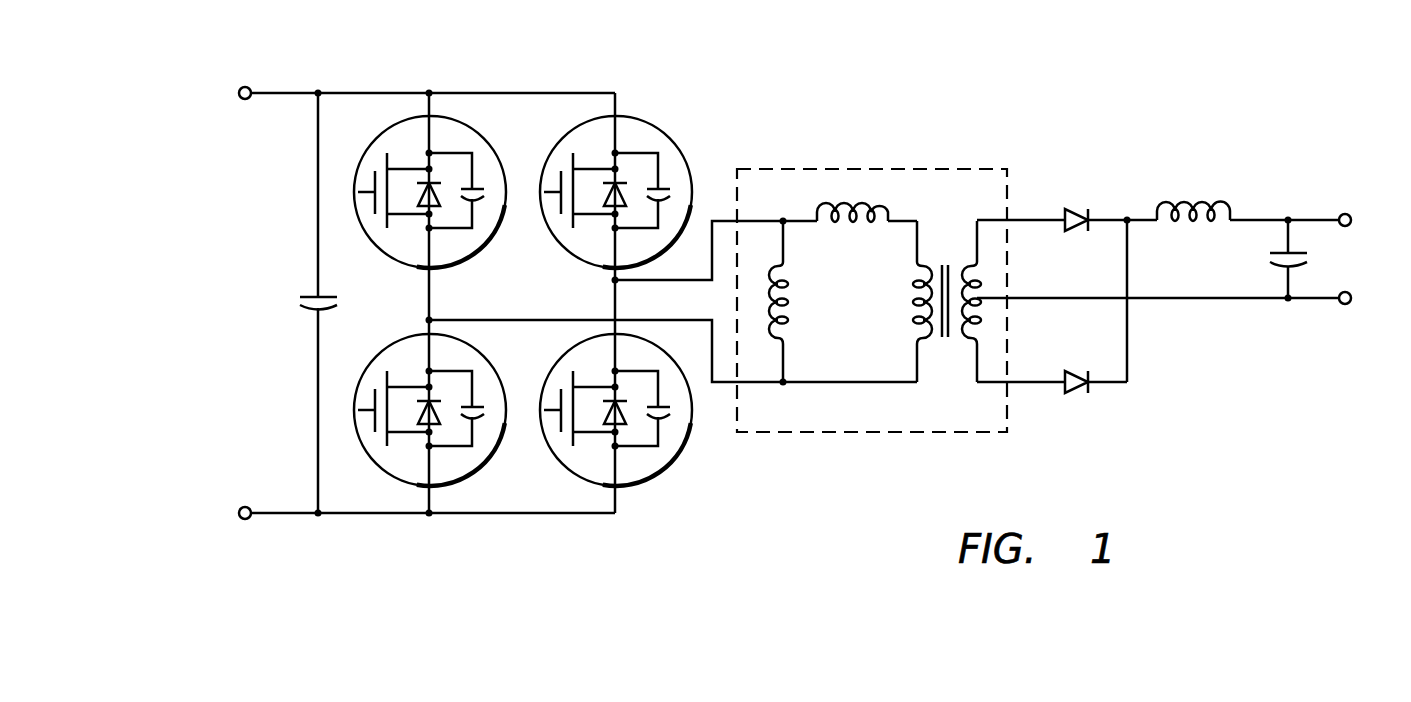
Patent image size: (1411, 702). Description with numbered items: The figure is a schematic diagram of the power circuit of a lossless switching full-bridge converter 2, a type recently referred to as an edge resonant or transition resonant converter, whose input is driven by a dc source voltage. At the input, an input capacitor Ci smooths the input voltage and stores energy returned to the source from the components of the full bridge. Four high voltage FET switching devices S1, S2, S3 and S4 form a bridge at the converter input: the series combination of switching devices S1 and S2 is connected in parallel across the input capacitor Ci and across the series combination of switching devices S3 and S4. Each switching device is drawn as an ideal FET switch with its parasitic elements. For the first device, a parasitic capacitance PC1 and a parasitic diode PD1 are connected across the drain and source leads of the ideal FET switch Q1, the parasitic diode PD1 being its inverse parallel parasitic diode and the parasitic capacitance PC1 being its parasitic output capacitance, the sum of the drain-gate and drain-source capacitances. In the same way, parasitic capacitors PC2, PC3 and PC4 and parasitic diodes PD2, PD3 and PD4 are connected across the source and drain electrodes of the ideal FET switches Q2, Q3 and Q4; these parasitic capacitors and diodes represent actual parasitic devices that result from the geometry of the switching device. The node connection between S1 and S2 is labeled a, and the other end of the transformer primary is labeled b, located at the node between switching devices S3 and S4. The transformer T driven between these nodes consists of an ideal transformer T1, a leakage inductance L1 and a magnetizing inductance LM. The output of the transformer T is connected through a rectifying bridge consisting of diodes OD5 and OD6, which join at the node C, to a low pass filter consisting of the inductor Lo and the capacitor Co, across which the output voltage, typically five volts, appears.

The lossless switching full-bridge converter 2 is at (1028, 111).
The switching device S1 is at (430, 189).
The switching device S2 is at (430, 405).
The switching device S3 is at (615, 189).
The switching device S4 is at (616, 405).
The ideal FET switch Q1 is at (395, 180).
The ideal FET switch Q2 is at (395, 399).
The ideal FET switch Q3 is at (581, 180).
The ideal FET switch Q4 is at (581, 399).
The parasitic diode PD1 is at (414, 218).
The parasitic diode PD2 is at (414, 437).
The parasitic diode PD3 is at (600, 218).
The parasitic diode PD4 is at (600, 437).
The parasitic capacitance PC1 is at (455, 202).
The parasitic capacitor PC2 is at (455, 421).
The parasitic capacitor PC3 is at (641, 202).
The parasitic capacitor PC4 is at (641, 421).
The input capacitor Ci is at (306, 303).
The node a is at (665, 341).
The node b is at (757, 256).
The transformer T is at (872, 297).
The leakage inductance L1 is at (852, 198).
The magnetizing inductance LM is at (815, 301).
The ideal transformer T1 is at (947, 301).
The diode OD5 is at (1076, 234).
The diode OD6 is at (1078, 368).
The rectifier output node C is at (1116, 287).
The inductor Lo is at (1193, 196).
The capacitor Co is at (1302, 259).